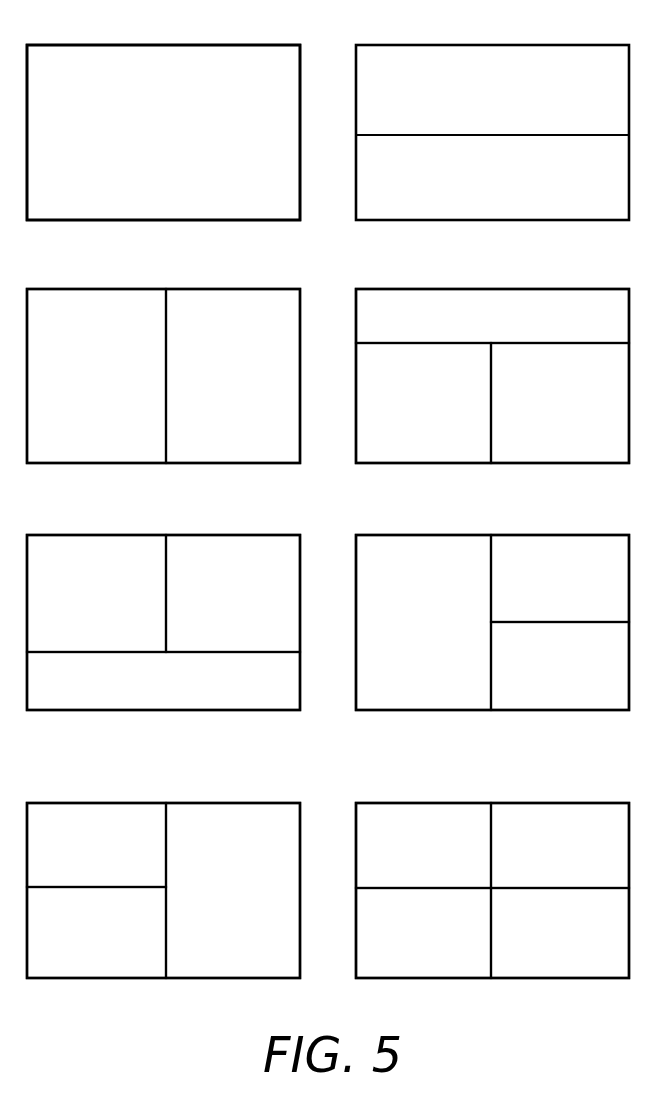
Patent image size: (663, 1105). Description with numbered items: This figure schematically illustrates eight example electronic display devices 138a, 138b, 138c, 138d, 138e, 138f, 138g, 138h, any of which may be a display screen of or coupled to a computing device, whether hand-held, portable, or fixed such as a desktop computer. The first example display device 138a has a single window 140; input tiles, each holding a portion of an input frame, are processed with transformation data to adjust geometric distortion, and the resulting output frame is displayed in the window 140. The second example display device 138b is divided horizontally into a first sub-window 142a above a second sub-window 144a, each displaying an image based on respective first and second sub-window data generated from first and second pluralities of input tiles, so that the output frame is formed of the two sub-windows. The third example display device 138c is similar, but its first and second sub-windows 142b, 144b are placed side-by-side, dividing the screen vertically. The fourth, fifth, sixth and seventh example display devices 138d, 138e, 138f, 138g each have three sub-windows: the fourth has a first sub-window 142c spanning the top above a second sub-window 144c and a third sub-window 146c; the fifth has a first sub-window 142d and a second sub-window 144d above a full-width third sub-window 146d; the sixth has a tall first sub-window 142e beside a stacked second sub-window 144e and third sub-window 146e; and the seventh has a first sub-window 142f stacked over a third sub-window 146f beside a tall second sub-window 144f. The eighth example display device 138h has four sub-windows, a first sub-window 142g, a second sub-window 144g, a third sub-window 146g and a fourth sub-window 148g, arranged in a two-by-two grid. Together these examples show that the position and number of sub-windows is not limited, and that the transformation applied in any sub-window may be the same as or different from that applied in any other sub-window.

The first example display device 138a is at (160, 45).
The second example display device 138b is at (505, 45).
The third example display device 138c is at (152, 289).
The fourth example display device 138d is at (506, 289).
The fifth example display device 138e is at (150, 535).
The sixth example display device 138f is at (506, 535).
The seventh example display device 138g is at (147, 803).
The eighth example display device 138h is at (508, 803).
The window 140 is at (148, 140).
The first sub-window 142a is at (475, 106).
The second sub-window 144a is at (475, 186).
The first sub-window 142b is at (71, 386).
The second sub-window 144b is at (208, 386).
The first sub-window 142c is at (466, 326).
The second sub-window 144c is at (398, 414).
The third sub-window 146c is at (538, 414).
The first sub-window 142d is at (69, 606).
The second sub-window 144d is at (207, 606).
The third sub-window 146d is at (142, 692).
The first sub-window 142e is at (398, 630).
The second sub-window 144e is at (538, 586).
The third sub-window 146e is at (538, 676).
The first sub-window 142f is at (76, 854).
The third sub-window 146f is at (76, 936).
The second sub-window 144f is at (211, 900).
The first sub-window 142g is at (401, 856).
The second sub-window 144g is at (535, 856).
The third sub-window 146g is at (401, 942).
The fourth sub-window 148g is at (538, 942).